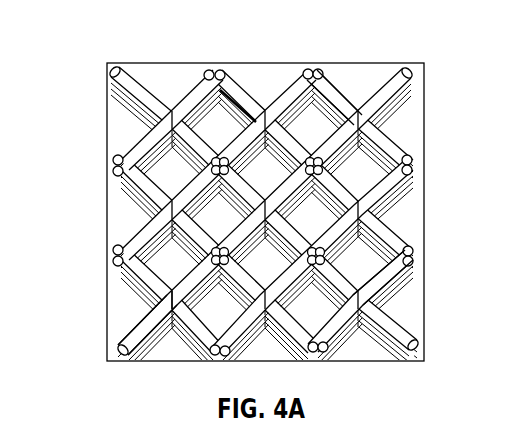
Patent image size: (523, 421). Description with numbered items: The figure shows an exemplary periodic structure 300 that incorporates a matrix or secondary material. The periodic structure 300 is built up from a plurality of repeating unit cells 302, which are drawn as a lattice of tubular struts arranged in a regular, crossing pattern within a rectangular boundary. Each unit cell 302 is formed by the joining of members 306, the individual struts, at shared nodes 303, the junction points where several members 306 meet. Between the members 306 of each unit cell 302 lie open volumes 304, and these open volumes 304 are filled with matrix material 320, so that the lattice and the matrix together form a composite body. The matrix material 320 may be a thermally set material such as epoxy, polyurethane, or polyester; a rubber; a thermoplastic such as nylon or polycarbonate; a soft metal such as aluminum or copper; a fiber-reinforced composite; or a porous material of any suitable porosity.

The periodic structure 300 is at (98, 34).
The unit cell 302 is at (334, 79).
The shared node 303 is at (171, 302).
The open volume 304 is at (233, 125).
The member 306 is at (132, 337).
The matrix material 320 is at (402, 279).